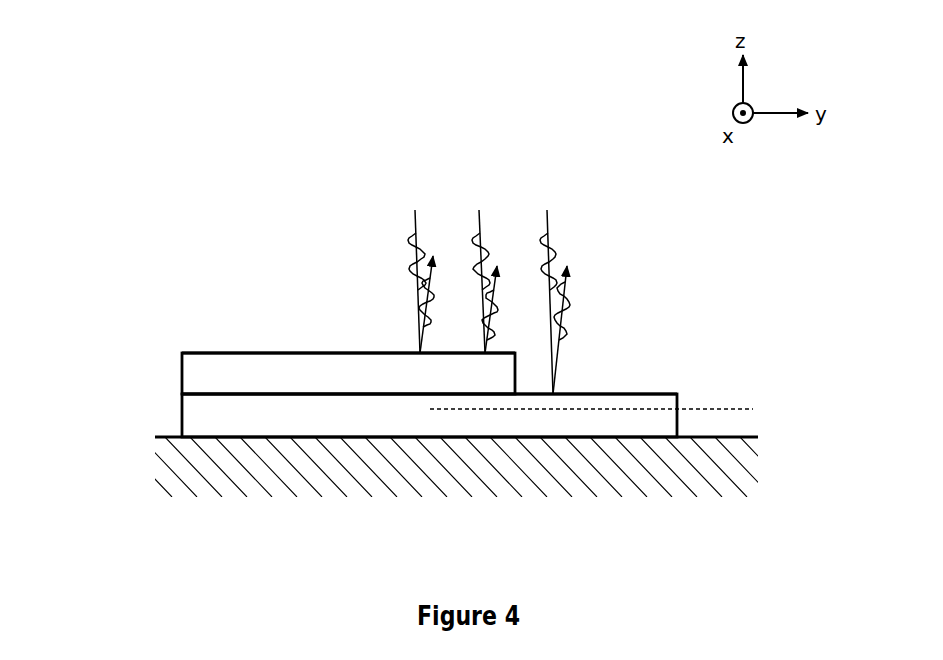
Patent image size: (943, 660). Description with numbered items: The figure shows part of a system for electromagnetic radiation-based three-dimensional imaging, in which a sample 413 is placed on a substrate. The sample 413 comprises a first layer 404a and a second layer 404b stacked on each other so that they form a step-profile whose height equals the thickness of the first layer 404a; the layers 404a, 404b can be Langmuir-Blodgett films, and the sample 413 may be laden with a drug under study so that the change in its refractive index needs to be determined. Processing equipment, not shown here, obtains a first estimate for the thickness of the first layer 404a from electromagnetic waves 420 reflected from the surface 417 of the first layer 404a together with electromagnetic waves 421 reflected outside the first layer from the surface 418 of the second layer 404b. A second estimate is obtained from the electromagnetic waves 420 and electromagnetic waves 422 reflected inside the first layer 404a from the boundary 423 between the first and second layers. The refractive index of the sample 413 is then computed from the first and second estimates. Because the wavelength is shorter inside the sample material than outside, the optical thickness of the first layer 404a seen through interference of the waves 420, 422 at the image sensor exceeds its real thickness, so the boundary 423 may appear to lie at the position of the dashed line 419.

The sample 413 is at (344, 387).
The first layer 404a is at (182, 370).
The second layer 404b is at (378, 438).
The surface of the first layer 417 is at (367, 352).
The boundary between the first and second layers 423 is at (318, 393).
The surface of the second layer 418 is at (617, 393).
The dashed line 419 is at (708, 409).
The electromagnetic waves reflected from the surface of the first layer 420 is at (440, 283).
The electromagnetic waves reflected inside the first layer 422 is at (500, 297).
The electromagnetic waves reflected from the surface of the second layer 421 is at (582, 287).